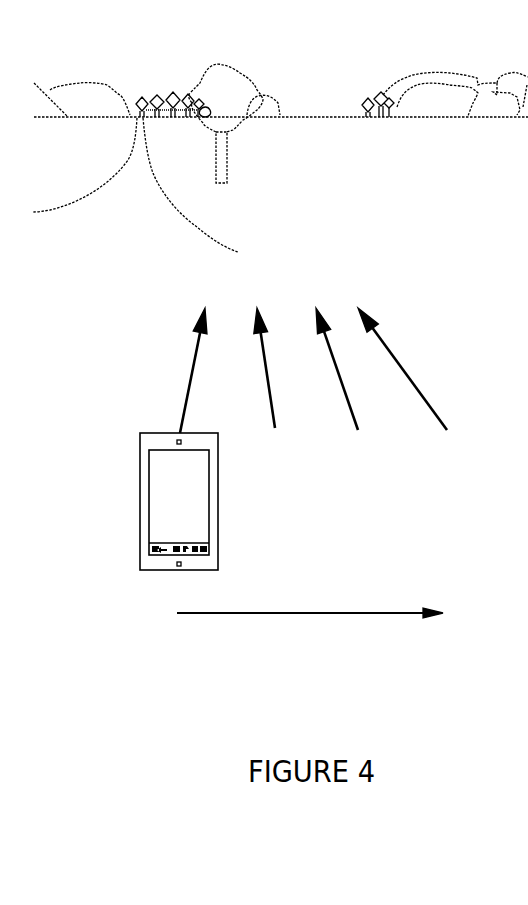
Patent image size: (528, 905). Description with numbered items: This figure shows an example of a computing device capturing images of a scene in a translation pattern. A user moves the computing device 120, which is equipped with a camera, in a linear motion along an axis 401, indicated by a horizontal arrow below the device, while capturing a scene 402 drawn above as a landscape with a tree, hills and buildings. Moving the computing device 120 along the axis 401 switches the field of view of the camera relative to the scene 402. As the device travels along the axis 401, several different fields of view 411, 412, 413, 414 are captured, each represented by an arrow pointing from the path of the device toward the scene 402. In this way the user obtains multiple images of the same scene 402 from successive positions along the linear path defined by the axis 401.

The scene 402 is at (280, 173).
The field of view 411 is at (197, 355).
The field of view 412 is at (273, 386).
The field of view 413 is at (345, 385).
The field of view 414 is at (410, 385).
The computing device 120 is at (140, 497).
The axis 401 is at (360, 614).